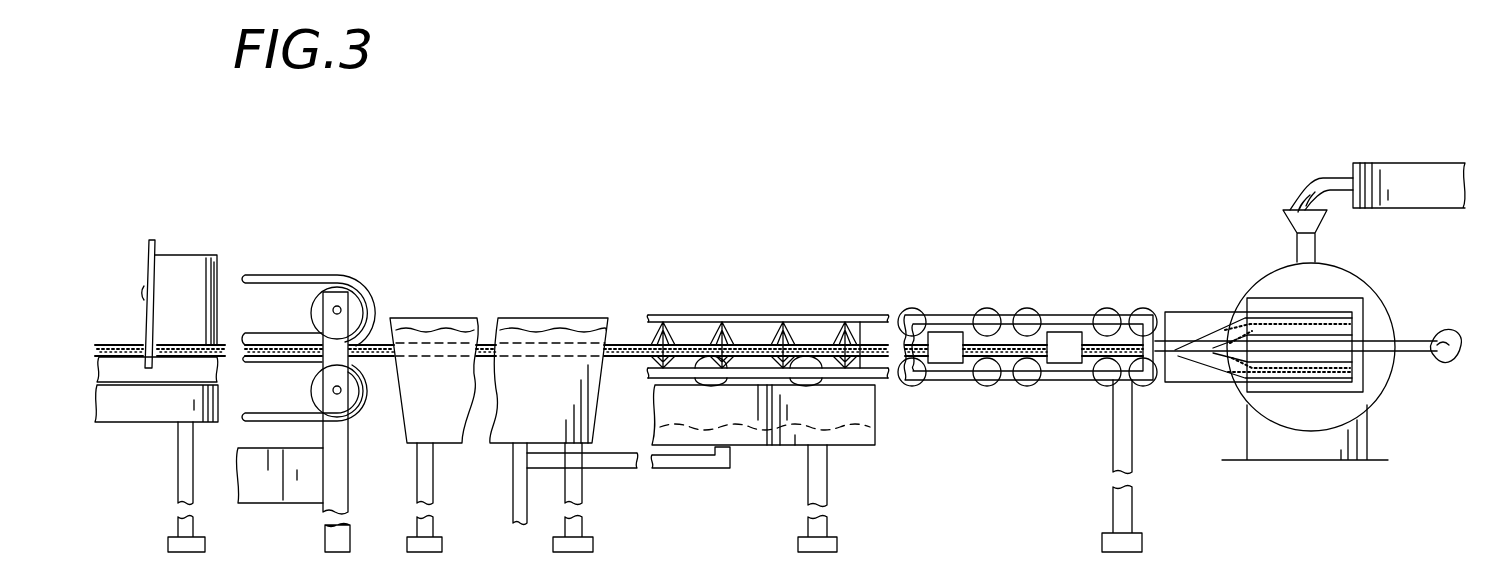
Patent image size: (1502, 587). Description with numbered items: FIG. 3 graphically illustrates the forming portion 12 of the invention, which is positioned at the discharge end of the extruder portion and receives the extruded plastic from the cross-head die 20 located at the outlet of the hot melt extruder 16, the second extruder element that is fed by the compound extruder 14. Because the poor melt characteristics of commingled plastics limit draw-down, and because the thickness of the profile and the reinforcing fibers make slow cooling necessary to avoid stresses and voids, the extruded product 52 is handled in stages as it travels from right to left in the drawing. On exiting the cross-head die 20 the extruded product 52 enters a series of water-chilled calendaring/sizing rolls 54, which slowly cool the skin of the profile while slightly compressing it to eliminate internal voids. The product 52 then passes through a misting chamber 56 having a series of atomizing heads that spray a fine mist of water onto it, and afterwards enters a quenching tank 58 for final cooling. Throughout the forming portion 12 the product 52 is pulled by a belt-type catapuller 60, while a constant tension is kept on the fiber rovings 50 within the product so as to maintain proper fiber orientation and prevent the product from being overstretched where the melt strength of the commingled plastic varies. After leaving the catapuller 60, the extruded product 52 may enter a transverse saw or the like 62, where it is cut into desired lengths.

The forming portion 12 is at (950, 224).
The compound extruder 14 is at (1408, 162).
The hot melt extruder 16 is at (1272, 263).
The cross-head die 20 is at (1182, 372).
The fiber rovings 50 is at (1440, 336).
The extruded product 52 is at (187, 342).
The calendaring/sizing rolls 54 is at (953, 333).
The misting chamber 56 is at (787, 303).
The quenching tank 58 is at (550, 316).
The belt-type catapuller 60 is at (330, 278).
The transverse saw 62 is at (166, 225).